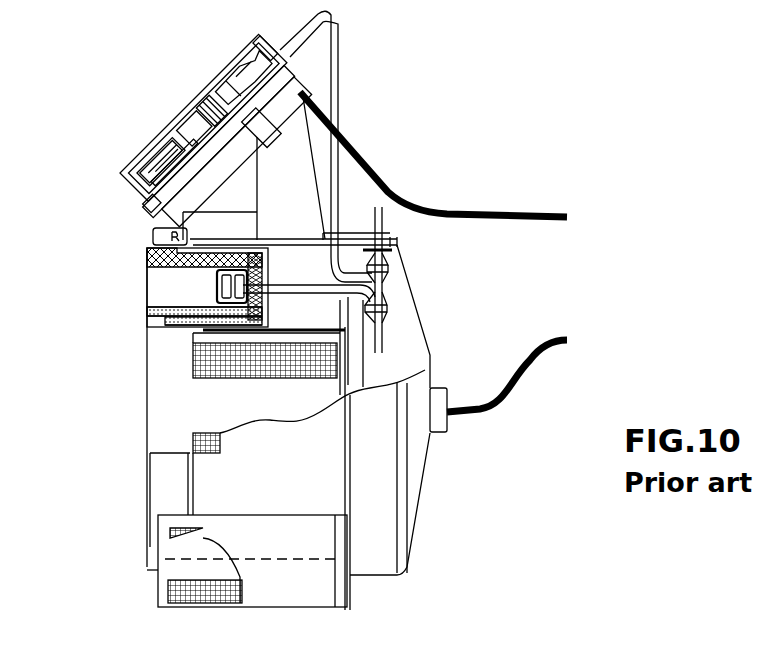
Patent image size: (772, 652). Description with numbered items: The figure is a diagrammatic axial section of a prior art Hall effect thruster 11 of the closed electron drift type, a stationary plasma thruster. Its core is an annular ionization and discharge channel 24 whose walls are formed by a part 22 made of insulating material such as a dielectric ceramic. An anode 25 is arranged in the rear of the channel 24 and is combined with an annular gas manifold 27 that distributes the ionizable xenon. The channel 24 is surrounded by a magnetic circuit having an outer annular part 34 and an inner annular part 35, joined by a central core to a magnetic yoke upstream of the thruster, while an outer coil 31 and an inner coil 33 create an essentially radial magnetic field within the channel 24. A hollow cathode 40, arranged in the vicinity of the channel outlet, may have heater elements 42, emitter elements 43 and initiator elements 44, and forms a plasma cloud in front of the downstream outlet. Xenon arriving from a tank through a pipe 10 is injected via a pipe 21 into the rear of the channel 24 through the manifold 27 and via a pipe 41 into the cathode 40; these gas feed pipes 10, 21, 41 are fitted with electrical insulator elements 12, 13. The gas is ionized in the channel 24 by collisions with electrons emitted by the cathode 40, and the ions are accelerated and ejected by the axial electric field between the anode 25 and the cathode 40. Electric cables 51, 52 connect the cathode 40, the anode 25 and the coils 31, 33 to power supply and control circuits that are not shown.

The pipe 10 is at (389, 221).
The Hall effect thruster 11 is at (389, 141).
The electrical insulator element 12 is at (393, 310).
The electrical insulator element 13 is at (385, 267).
The pipe 21 is at (298, 286).
The walls of insulating material 22 is at (197, 260).
The ionization and discharge channel 24 is at (148, 283).
The anode 25 is at (138, 277).
The gas manifold 27 is at (217, 285).
The outer coil 31 is at (137, 585).
The inner coil 33 is at (190, 367).
The outer annular part of magnetic circuit 34 is at (151, 236).
The inner annular part of magnetic circuit 35 is at (181, 425).
The cathode 40 is at (163, 96).
The pipe 41 is at (343, 47).
The heater elements 42 is at (172, 130).
The emitter elements 43 is at (170, 157).
The initiator elements 44 is at (125, 176).
The electric cable 51 is at (527, 212).
The electric cable 52 is at (553, 332).